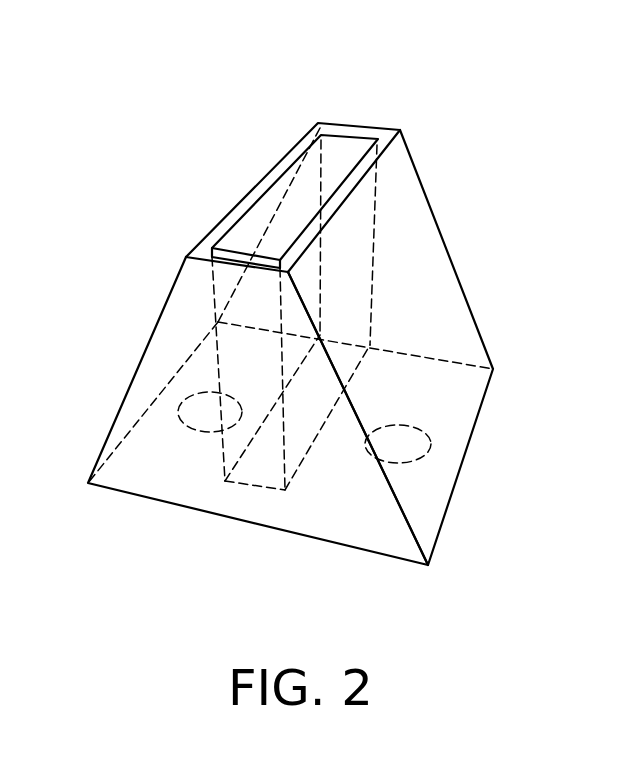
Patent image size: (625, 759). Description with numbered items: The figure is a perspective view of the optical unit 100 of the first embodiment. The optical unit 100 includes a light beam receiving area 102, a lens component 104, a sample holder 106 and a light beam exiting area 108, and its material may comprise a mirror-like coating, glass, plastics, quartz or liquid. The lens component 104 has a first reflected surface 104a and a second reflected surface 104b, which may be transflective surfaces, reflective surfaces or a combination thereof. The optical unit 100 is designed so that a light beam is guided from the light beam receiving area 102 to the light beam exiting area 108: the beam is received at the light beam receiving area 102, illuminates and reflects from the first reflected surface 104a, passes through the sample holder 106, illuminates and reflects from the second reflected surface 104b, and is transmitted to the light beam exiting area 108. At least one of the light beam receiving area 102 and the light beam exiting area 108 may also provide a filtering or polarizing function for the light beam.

The optical unit 100 is at (583, 103).
The light beam receiving area 102 is at (190, 423).
The lens component 104 is at (170, 293).
The first reflected surface 104a is at (152, 366).
The second reflected surface 104b is at (447, 252).
The sample holder 106 is at (348, 137).
The light beam exiting area 108 is at (420, 451).